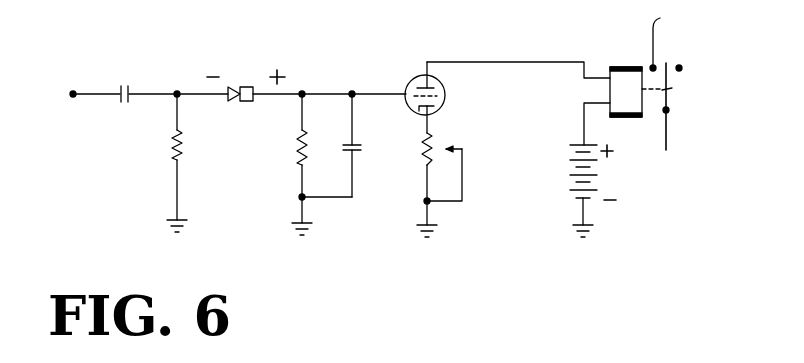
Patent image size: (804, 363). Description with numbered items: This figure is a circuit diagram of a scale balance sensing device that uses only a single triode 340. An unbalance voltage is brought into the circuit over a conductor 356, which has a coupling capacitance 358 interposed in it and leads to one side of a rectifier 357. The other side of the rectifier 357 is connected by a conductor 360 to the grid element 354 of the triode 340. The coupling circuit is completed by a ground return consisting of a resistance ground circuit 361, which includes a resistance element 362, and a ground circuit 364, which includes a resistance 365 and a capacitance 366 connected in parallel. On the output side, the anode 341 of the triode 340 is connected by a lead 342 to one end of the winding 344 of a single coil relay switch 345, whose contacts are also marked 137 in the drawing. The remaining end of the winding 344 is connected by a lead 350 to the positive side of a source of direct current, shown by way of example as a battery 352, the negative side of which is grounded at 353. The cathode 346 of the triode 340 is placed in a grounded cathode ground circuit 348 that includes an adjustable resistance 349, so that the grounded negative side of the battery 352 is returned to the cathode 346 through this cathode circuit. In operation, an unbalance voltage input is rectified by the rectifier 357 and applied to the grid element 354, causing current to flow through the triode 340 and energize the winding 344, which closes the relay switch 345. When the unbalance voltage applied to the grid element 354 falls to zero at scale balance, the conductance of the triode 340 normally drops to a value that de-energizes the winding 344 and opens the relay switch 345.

The coupling capacitance 358 is at (112, 99).
The conductor 356 is at (160, 97).
The resistance element 362 is at (185, 139).
The resistance ground circuit 361 is at (180, 198).
The rectifier 357 is at (234, 85).
The conductor 360 is at (316, 94).
The resistance 365 is at (298, 140).
The ground circuit 364 is at (298, 218).
The capacitance 366 is at (358, 148).
The triode 340 is at (420, 76).
The anode 341 is at (436, 86).
The grid element 354 is at (440, 96).
The cathode 346 is at (438, 108).
The lead 342 is at (497, 62).
The adjustable resistance 349 is at (422, 150).
The ground circuit 348 is at (420, 218).
The winding 344 is at (627, 66).
The relay switch 345 is at (672, 88).
The switch contacts 137 is at (670, 137).
The lead 350 is at (583, 130).
The battery 352 is at (598, 176).
The ground 353 is at (590, 226).